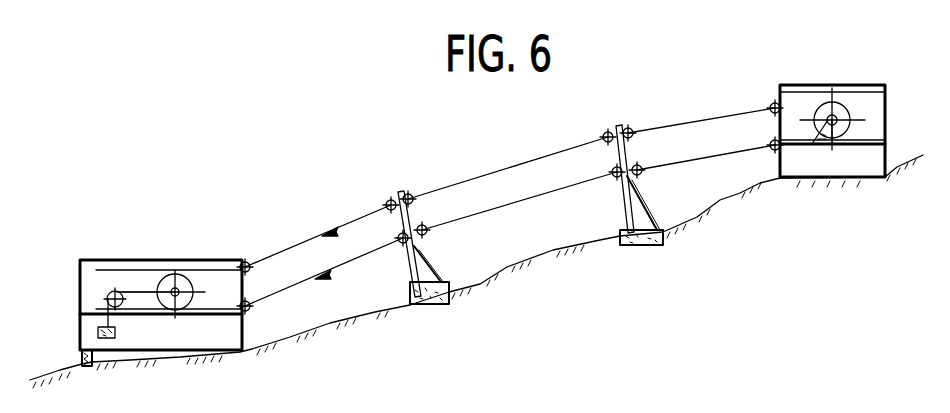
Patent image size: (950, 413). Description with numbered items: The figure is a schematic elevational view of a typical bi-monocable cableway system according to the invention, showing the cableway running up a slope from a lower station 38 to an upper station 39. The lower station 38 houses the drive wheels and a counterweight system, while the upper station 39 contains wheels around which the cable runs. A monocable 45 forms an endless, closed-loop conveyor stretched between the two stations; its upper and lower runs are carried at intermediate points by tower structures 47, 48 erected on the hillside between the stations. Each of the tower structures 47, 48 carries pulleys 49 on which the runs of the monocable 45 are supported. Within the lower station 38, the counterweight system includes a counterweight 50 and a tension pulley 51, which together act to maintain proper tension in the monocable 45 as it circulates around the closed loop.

The lower station 38 is at (169, 256).
The upper station 39 is at (846, 84).
The monocable 45 is at (356, 221).
The tower structure 47 is at (400, 191).
The tower structure 48 is at (617, 125).
The pulleys 49 is at (427, 231).
The counterweight 50 is at (98, 333).
The tension pulley 51 is at (107, 299).